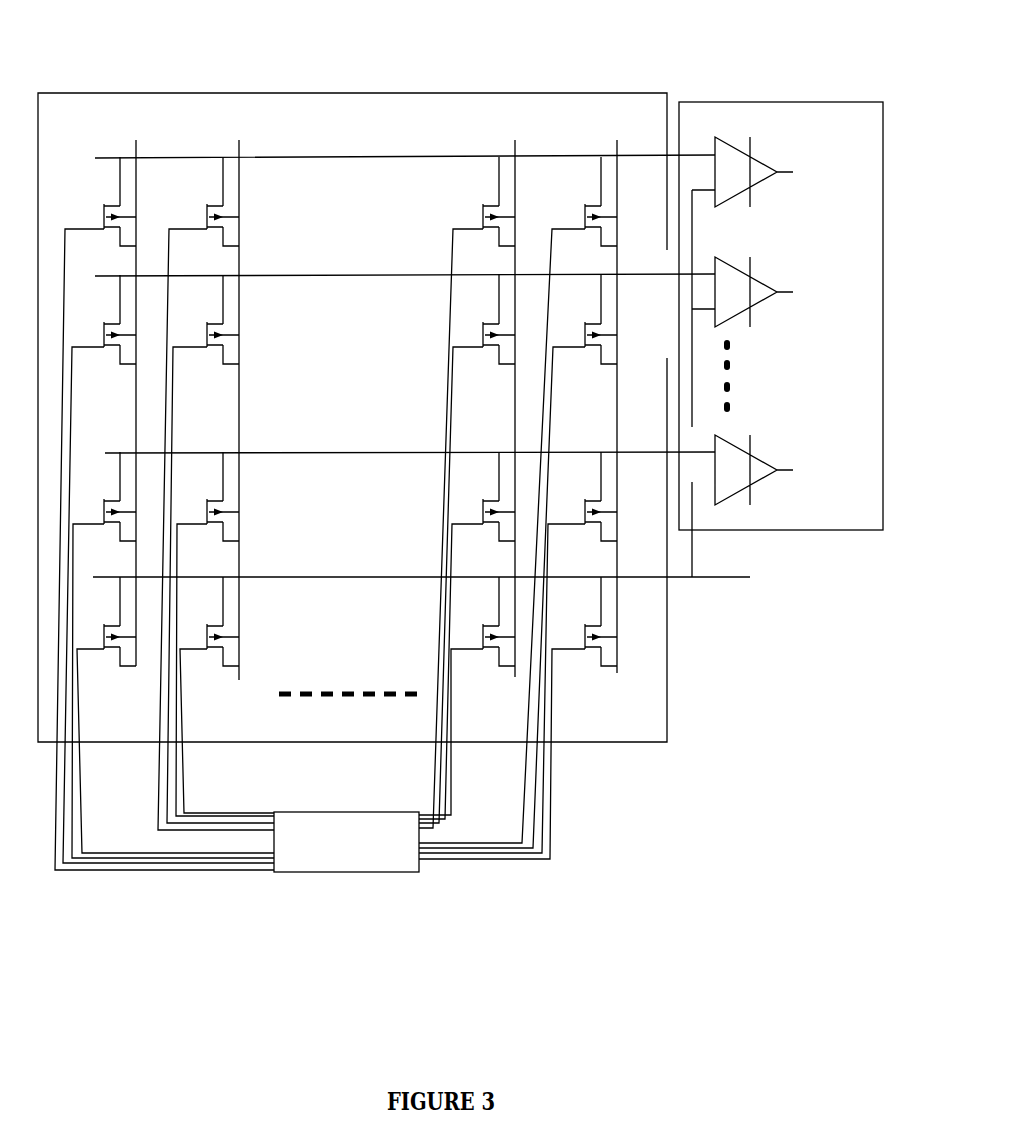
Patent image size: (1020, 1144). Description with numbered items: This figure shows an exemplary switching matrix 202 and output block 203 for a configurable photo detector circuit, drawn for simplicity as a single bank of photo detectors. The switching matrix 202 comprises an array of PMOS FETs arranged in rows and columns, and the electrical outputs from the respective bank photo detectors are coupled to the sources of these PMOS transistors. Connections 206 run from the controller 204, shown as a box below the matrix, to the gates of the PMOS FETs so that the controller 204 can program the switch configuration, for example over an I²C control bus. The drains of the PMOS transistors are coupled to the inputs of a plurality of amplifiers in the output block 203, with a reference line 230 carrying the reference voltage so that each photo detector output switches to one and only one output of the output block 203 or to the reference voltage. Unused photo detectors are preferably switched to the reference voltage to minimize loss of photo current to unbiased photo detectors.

The switching matrix 202 is at (488, 83).
The output block 203 is at (840, 100).
The controller 204 is at (367, 872).
The connections 206 is at (185, 785).
The reference voltage line 230 is at (679, 383).